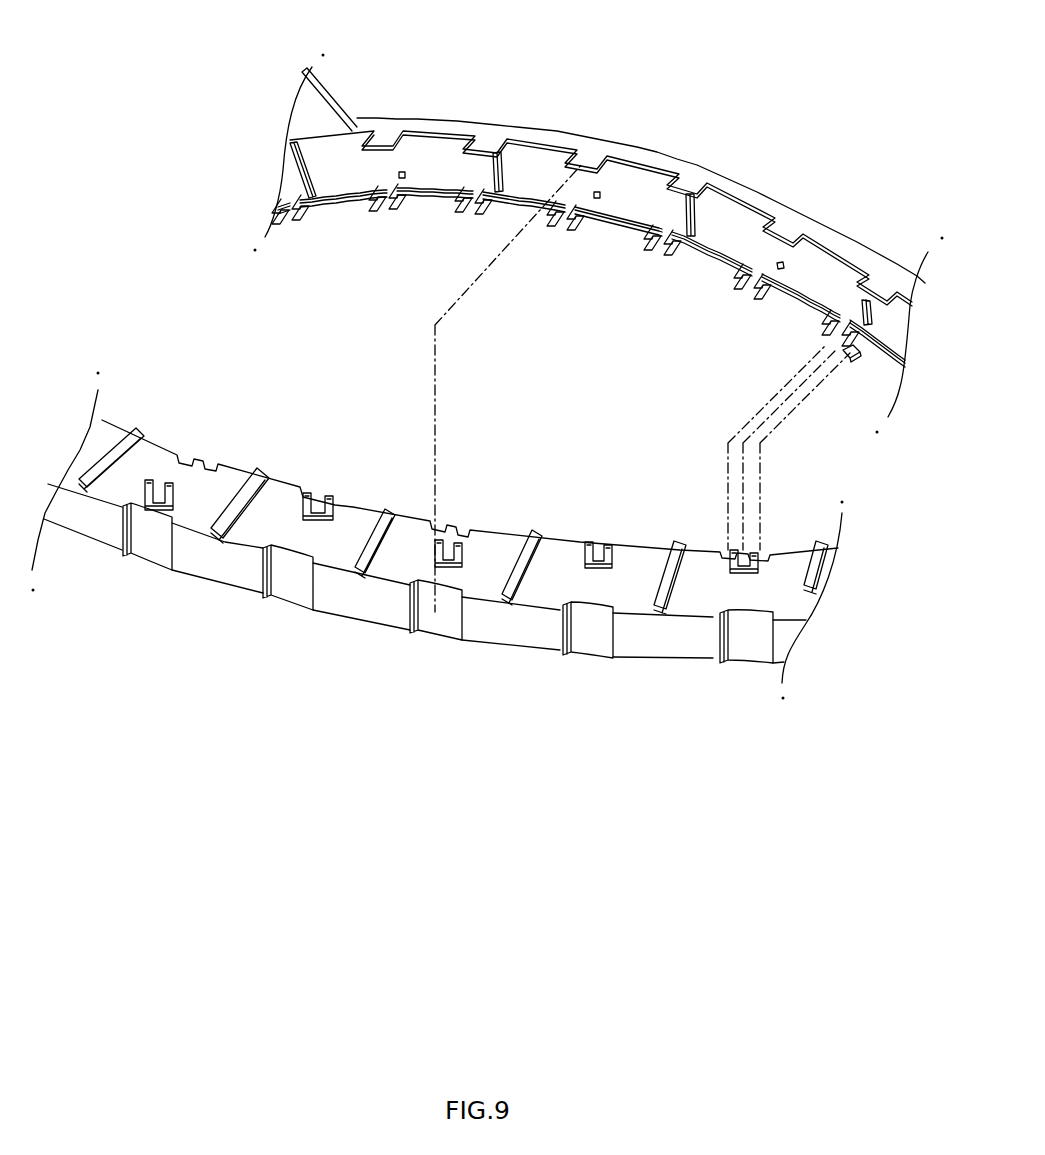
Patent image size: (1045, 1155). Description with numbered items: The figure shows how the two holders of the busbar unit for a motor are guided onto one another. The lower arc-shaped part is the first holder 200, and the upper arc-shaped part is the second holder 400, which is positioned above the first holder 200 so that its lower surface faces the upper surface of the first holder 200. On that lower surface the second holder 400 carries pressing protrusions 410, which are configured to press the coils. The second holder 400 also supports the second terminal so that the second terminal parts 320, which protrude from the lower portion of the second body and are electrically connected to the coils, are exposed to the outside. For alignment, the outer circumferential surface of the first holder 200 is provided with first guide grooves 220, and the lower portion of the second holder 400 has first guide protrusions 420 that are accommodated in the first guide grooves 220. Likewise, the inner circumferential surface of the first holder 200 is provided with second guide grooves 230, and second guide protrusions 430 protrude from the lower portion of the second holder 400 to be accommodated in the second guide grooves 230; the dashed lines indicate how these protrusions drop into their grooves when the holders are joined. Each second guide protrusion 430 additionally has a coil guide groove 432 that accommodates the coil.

The first holder 200 is at (345, 605).
The first guide groove 220 is at (742, 640).
The second guide groove 230 is at (765, 548).
The second terminal part 320 is at (597, 192).
The second holder 400 is at (637, 195).
The pressing protrusion 410 is at (497, 168).
The first guide protrusion 420 is at (788, 232).
The second guide protrusion 430 is at (823, 333).
The coil guide groove 432 is at (857, 358).